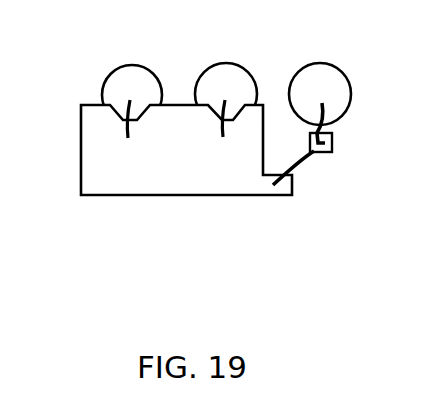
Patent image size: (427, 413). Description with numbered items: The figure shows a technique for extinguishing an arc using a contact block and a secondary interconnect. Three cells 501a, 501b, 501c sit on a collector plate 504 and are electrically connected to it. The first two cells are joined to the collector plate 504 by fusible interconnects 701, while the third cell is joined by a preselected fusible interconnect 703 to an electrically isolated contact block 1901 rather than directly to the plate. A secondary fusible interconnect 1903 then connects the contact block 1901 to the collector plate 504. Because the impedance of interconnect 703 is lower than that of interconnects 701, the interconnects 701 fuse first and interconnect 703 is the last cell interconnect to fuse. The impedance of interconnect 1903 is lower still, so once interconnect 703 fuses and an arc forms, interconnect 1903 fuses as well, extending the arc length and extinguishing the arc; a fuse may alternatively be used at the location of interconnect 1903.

The cell 501a is at (128, 72).
The cell 501b is at (223, 72).
The cell 501c is at (317, 72).
The collector plate 504 is at (198, 174).
The fusible interconnects 701 is at (217, 131).
The interconnect 703 is at (326, 122).
The contact block 1901 is at (333, 140).
The secondary fusible interconnect 1903 is at (293, 168).